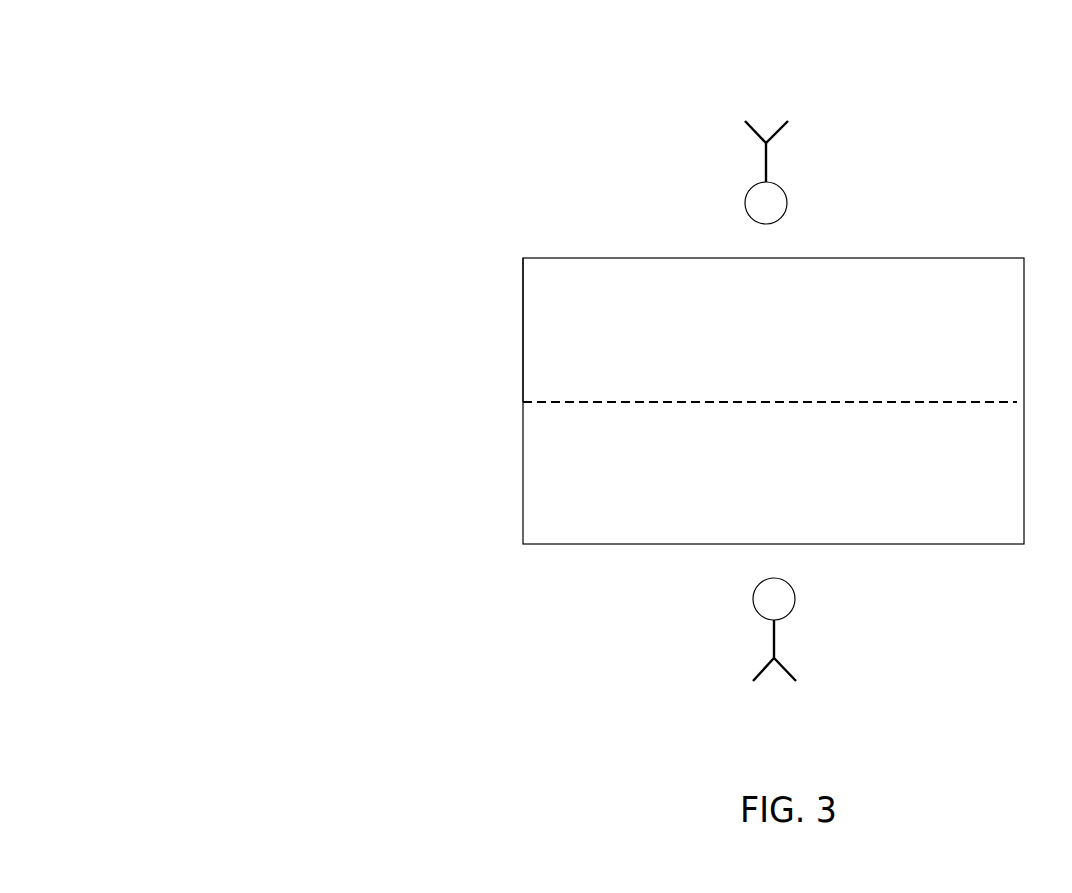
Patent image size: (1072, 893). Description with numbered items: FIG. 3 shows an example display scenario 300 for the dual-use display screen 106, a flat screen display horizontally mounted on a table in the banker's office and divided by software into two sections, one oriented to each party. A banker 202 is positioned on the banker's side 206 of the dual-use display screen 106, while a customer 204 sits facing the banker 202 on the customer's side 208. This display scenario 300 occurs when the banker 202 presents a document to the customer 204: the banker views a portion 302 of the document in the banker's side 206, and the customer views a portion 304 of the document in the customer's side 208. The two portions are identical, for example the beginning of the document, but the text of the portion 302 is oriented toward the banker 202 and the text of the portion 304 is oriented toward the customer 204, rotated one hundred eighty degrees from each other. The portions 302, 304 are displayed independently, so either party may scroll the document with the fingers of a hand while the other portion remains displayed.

The display scenario 300 is at (160, 78).
The banker 202 is at (757, 171).
The customer 204 is at (748, 634).
The dual-use display screen 106 is at (596, 258).
The banker's side 206 is at (522, 283).
The customer's side 208 is at (522, 424).
The portion of the document 302 is at (532, 329).
The portion of the document 304 is at (541, 467).